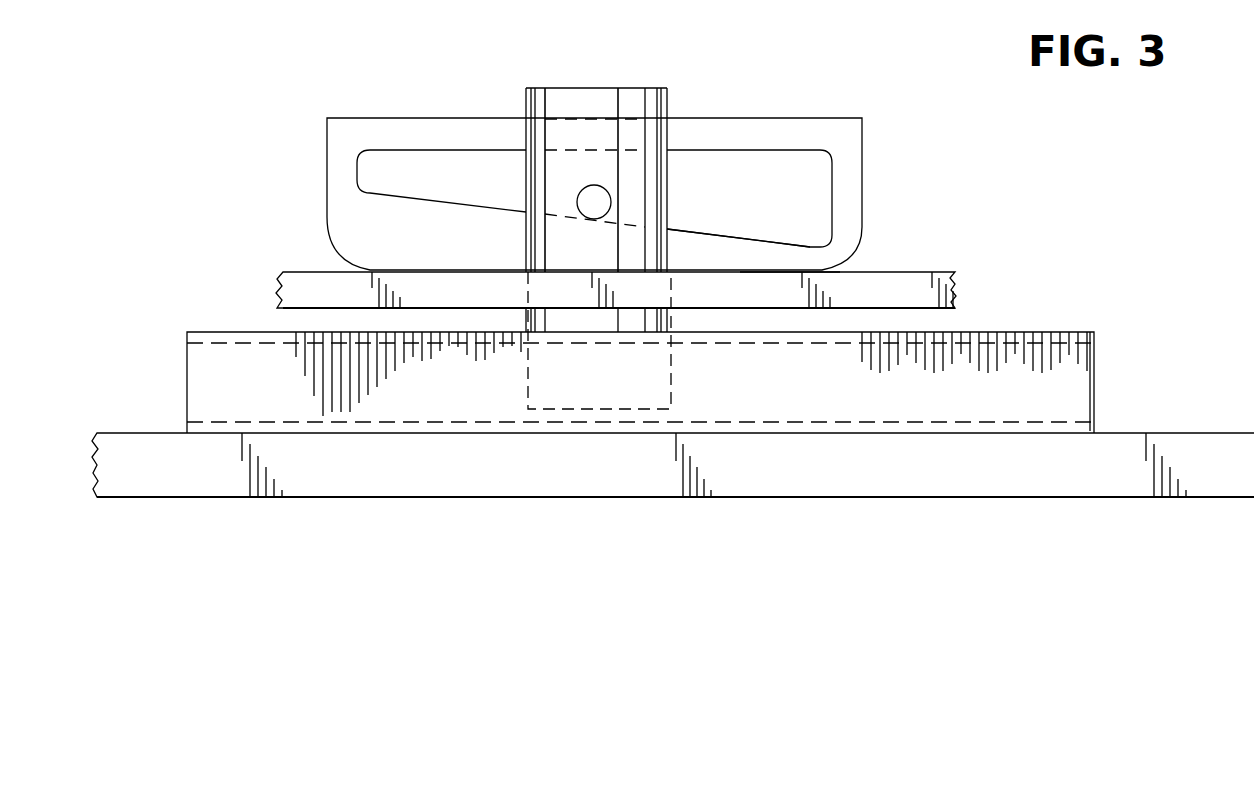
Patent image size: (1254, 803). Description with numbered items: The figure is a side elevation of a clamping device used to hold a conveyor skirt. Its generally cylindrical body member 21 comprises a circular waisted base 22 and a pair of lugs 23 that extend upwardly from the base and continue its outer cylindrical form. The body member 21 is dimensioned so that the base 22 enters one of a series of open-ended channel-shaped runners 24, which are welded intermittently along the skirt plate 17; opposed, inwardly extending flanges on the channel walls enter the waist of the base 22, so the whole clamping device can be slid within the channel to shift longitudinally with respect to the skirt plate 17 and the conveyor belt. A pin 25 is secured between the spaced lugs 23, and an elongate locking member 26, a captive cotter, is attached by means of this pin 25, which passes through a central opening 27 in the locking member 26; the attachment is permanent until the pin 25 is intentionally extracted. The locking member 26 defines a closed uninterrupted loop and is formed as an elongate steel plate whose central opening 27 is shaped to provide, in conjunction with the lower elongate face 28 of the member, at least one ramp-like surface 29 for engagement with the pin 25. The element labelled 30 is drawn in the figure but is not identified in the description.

The skirt plate 17 is at (373, 490).
The body member 21 is at (667, 100).
The circular waisted base 22 is at (618, 403).
The lugs 23 is at (566, 97).
The channel-shaped runner 24 is at (985, 348).
The pin 25 is at (590, 200).
The locking member 26 is at (327, 141).
The central opening 27 is at (708, 170).
The lower elongate face 28 is at (788, 273).
The ramp-like surface 29 is at (732, 236).
The plate 30 is at (290, 278).